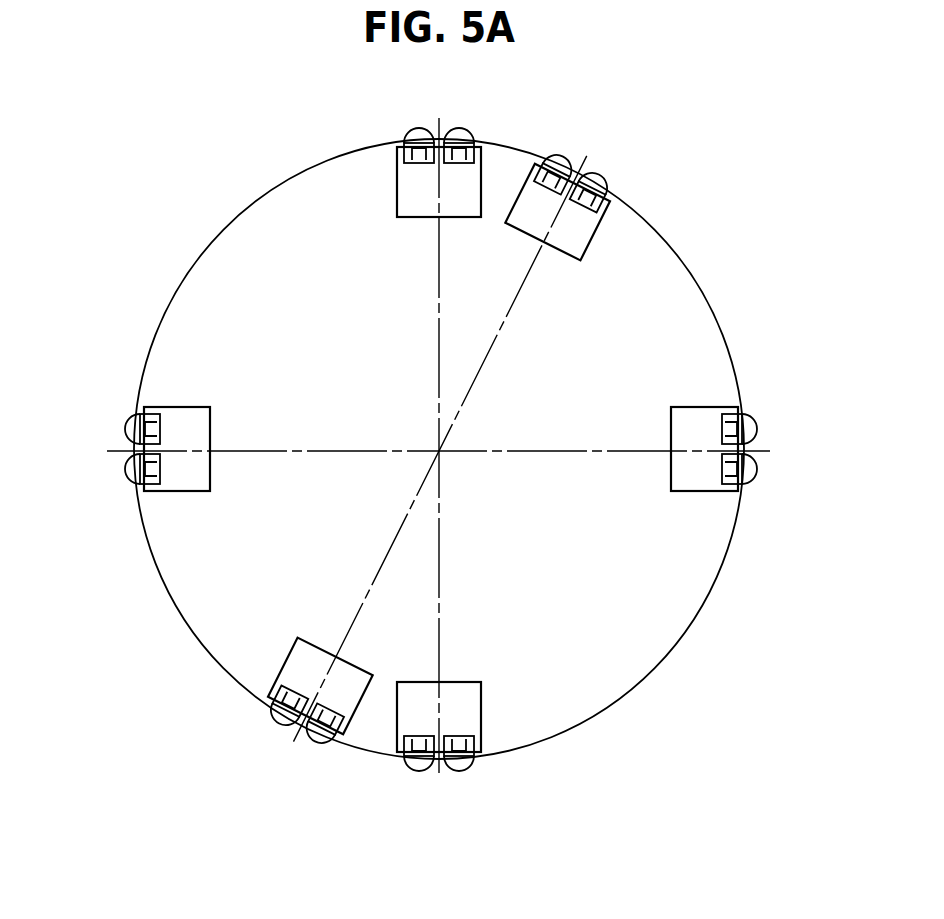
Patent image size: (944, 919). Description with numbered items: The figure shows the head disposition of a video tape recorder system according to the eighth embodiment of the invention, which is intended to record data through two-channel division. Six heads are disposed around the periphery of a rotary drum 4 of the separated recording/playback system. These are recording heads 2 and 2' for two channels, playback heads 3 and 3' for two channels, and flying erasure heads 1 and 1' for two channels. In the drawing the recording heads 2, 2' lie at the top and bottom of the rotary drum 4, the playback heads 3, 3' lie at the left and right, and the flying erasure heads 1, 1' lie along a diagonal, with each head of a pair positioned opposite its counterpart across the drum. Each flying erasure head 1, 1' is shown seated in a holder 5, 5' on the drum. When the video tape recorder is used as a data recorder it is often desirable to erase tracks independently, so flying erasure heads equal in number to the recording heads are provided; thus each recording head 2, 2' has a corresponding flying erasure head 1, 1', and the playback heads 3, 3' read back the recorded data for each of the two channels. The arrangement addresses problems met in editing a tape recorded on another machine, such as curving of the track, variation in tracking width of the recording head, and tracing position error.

The flying erasure head 1 is at (574, 150).
The flying erasure head 1' is at (286, 749).
The recording head 2 is at (439, 109).
The recording head 2' is at (436, 789).
The playback head 3 is at (101, 435).
The playback head 3' is at (772, 436).
The rotary drum 4 is at (195, 285).
The head holder 5 is at (570, 215).
The opposite head holder 5' is at (305, 670).